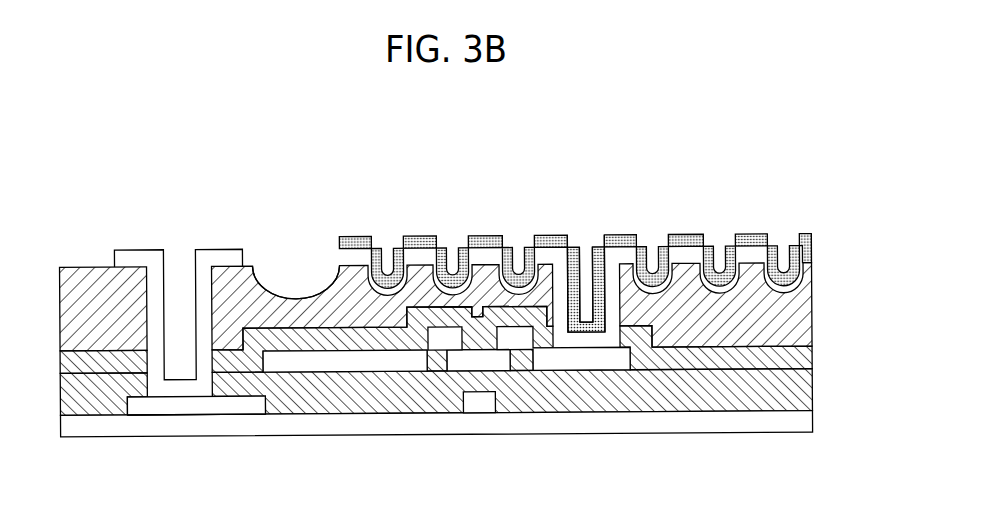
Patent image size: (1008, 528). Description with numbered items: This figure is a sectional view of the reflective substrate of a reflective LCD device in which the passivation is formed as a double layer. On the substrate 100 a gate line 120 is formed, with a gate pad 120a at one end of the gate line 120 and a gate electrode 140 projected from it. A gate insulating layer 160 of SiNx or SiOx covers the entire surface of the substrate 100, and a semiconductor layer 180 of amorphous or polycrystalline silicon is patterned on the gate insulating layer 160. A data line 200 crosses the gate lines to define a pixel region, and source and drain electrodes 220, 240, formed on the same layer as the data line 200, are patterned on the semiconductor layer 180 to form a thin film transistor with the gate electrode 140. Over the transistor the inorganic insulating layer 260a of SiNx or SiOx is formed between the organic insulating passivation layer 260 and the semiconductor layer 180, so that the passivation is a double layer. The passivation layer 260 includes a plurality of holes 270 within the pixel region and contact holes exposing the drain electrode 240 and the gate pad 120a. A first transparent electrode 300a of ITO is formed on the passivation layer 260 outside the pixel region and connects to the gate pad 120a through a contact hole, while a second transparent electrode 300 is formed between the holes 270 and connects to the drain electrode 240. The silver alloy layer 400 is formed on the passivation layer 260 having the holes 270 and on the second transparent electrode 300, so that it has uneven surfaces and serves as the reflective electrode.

The substrate 100 is at (812, 418).
The gate line 120 is at (225, 407).
The gate pad 120a is at (152, 407).
The gate electrode 140 is at (478, 403).
The gate insulating layer 160 is at (812, 385).
The semiconductor layer 180 is at (468, 360).
The data line 200 is at (283, 360).
The source electrode 220 is at (437, 340).
The drain electrode 240 is at (510, 337).
The passivation layer 260 is at (812, 323).
The inorganic insulating layer 260a is at (812, 355).
The hole 270 is at (302, 277).
The second transparent electrode 300 is at (695, 244).
The first transparent electrode 300a is at (135, 249).
The silver alloy layer 400 is at (617, 241).